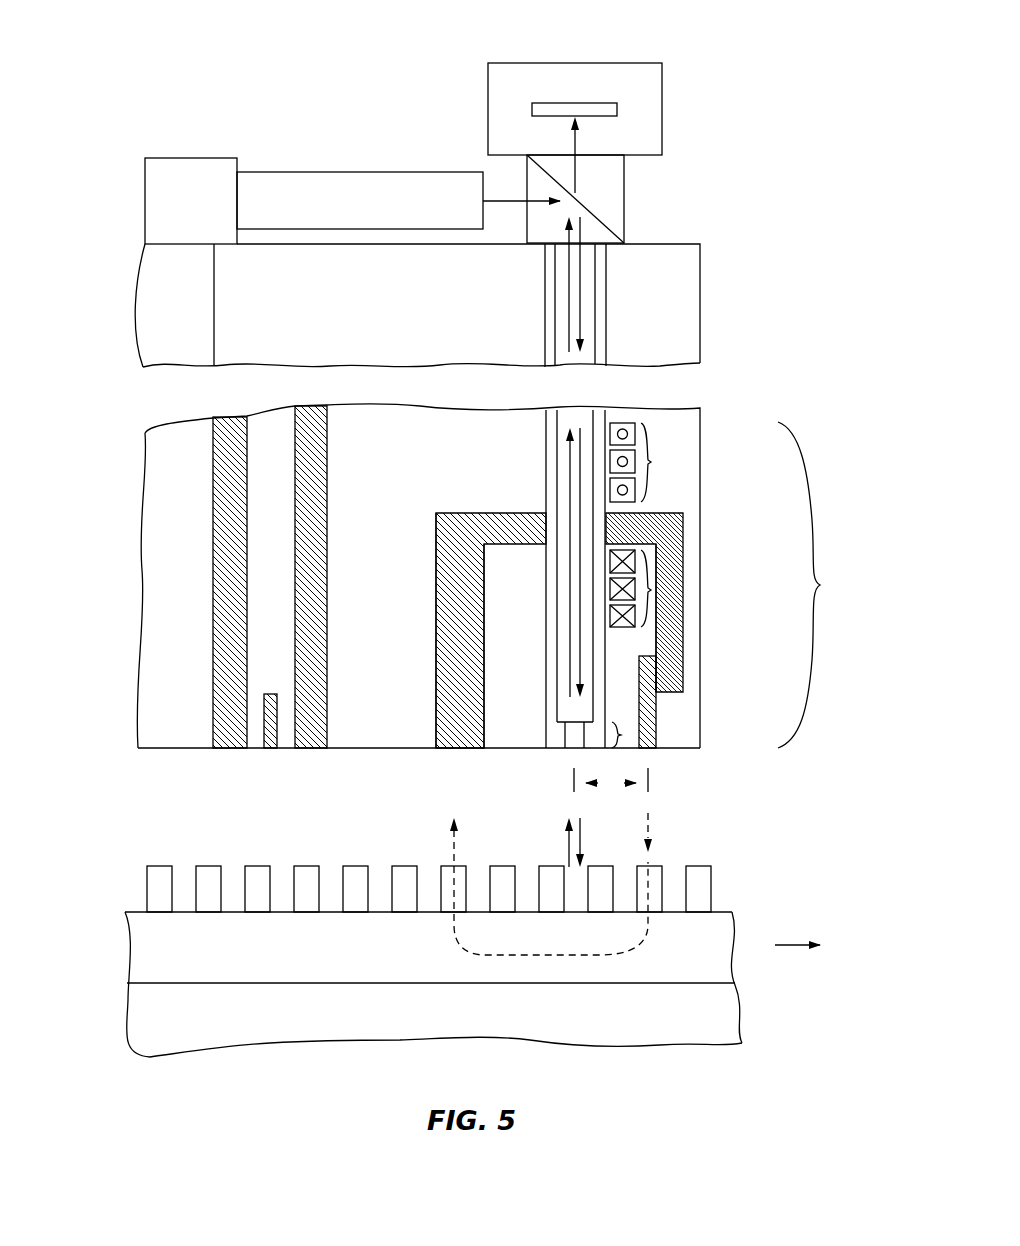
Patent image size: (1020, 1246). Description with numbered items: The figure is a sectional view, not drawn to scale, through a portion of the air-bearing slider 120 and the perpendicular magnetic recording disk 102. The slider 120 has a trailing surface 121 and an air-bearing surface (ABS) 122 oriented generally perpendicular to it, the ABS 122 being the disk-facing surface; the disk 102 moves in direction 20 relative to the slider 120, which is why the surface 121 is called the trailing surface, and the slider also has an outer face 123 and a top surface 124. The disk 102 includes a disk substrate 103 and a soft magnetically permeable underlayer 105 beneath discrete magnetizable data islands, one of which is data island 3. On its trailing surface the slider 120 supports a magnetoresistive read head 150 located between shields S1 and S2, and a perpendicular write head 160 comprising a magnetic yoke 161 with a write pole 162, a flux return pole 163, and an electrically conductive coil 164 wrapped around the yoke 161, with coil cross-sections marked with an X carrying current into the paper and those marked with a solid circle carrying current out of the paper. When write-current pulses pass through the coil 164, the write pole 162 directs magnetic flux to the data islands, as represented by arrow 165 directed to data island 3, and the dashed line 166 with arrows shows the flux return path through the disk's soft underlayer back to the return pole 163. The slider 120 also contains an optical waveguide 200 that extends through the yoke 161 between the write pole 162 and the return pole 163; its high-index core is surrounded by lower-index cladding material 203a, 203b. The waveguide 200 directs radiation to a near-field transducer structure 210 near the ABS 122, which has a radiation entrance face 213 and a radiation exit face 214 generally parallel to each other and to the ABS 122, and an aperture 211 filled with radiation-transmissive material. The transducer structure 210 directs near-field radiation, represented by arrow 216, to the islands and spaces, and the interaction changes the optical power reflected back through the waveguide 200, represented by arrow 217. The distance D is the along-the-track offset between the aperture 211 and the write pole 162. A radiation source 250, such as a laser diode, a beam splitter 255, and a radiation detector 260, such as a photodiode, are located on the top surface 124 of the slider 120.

The radiation detector 260 is at (637, 63).
The radiation source 250 is at (162, 158).
The beam splitter 255 is at (627, 198).
The top surface 124 is at (672, 244).
The trailing surface 121 is at (214, 325).
The optical waveguide 200 is at (560, 320).
The air-bearing slider 120 is at (140, 420).
The shield S1 is at (213, 474).
The shield S2 is at (328, 472).
The magnetoresistive read head 150 is at (262, 702).
The magnetic yoke 161 is at (460, 513).
The flux return pole 163 is at (435, 553).
The cladding material 203a is at (548, 633).
The cladding material 203b is at (597, 657).
The write pole 162 is at (658, 723).
The outer face 123 is at (702, 520).
The electrically conductive coil 164 is at (647, 590).
The arrow (reflected optical power) 217 is at (570, 580).
The arrow (near-field radiation) 216 is at (582, 608).
The radiation entrance face 213 is at (561, 722).
The aperture 211 is at (572, 735).
The radiation exit face 214 is at (573, 750).
The near-field transducer structure 210 is at (620, 736).
The arrow (write flux) 165 is at (665, 763).
The distance D is at (611, 782).
The perpendicular write head 160 is at (820, 585).
The air-bearing surface ABS is at (162, 750).
The air-bearing surface 122 is at (187, 750).
The soft underlayer 105 is at (713, 953).
The disk substrate 103 is at (722, 1007).
The data island 3 is at (663, 872).
The dashed line (flux return path) 166 is at (542, 957).
The direction 20 is at (817, 933).
The perpendicular magnetic recording disk 102 is at (140, 1067).